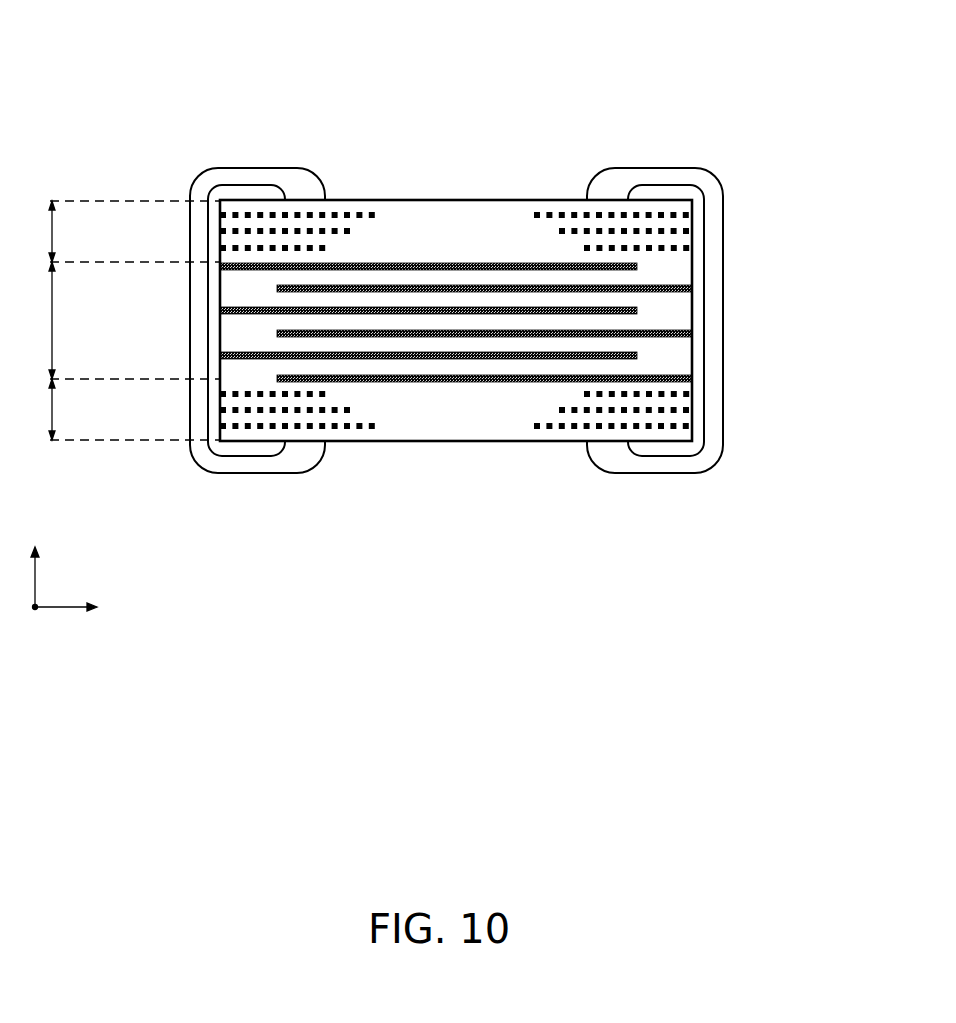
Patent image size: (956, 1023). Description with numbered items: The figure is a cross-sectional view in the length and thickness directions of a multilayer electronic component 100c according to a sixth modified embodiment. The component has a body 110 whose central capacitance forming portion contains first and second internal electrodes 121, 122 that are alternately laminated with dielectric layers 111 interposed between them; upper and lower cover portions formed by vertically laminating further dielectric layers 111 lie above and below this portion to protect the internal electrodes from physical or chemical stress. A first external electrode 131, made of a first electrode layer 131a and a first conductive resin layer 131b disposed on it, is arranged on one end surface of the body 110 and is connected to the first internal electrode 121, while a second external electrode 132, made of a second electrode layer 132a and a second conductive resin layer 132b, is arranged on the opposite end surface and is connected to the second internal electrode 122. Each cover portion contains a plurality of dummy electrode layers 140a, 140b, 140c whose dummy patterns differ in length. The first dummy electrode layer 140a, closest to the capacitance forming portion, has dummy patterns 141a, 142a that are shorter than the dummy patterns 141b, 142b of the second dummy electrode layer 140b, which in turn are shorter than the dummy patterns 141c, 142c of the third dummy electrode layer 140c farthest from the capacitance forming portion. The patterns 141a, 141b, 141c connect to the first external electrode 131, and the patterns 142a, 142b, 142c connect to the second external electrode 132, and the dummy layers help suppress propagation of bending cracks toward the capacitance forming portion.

The multilayer electronic component 100c is at (175, 55).
The body 110 is at (424, 200).
The dielectric layer 111 is at (358, 298).
The first internal electrode 121 is at (468, 265).
The second internal electrode 122 is at (500, 287).
The first external electrode 131 is at (110, 312).
The first electrode layer 131a is at (213, 316).
The first conductive resin layer 131b is at (204, 342).
The second external electrode 132 is at (806, 312).
The second electrode layer 132a is at (700, 312).
The second conductive resin layer 132b is at (710, 338).
The first dummy electrode layer 140a is at (705, 565).
The second dummy electrode layer 140b is at (705, 660).
The third dummy electrode layer 140c is at (705, 755).
The dummy pattern of first dummy electrode layer 141a is at (230, 246).
The dummy pattern of second dummy electrode layer 141b is at (258, 230).
The dummy pattern of third dummy electrode layer 141c is at (312, 214).
The dummy pattern of first dummy electrode layer 142a is at (678, 246).
The dummy pattern of second dummy electrode layer 142b is at (655, 230).
The dummy pattern of third dummy electrode layer 142c is at (598, 214).